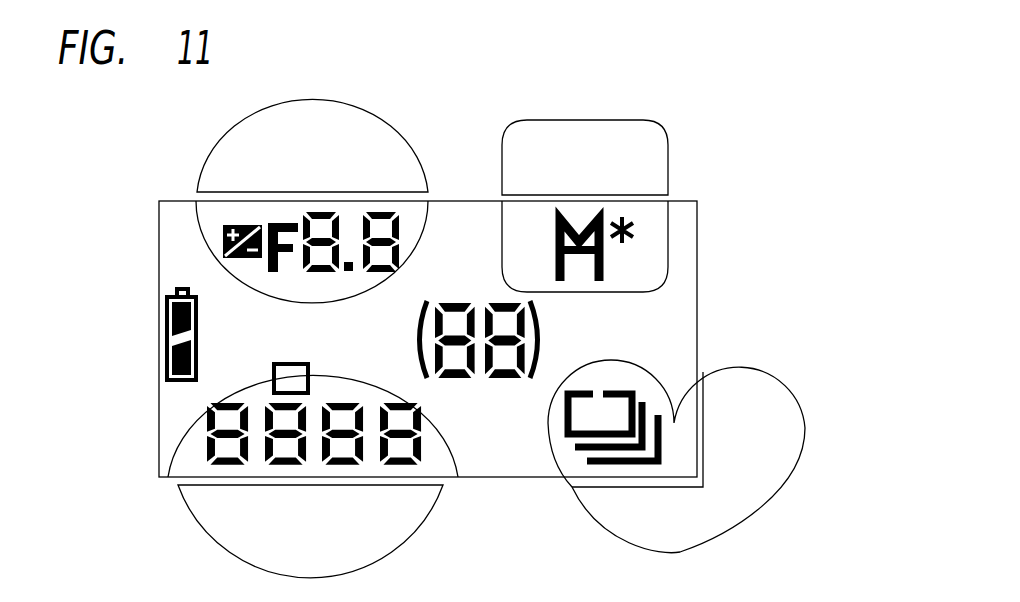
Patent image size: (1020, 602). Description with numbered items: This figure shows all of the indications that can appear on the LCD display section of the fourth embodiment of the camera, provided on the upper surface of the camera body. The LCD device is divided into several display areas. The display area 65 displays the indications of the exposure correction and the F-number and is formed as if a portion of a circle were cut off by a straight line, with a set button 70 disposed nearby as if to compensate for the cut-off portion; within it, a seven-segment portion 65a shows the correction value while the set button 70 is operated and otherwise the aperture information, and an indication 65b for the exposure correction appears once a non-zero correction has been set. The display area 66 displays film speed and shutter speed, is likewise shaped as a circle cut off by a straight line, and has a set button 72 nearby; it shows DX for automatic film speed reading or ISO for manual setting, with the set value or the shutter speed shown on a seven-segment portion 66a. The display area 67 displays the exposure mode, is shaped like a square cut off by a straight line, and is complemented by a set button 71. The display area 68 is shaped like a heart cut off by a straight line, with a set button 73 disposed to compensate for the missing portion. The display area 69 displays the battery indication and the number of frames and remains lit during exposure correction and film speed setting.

The display area 65 is at (200, 215).
The seven-segment portion 65a is at (323, 213).
The indication for the exposure correction 65b is at (243, 225).
The display area 66 is at (187, 445).
The seven-segment portion 66a is at (342, 467).
The display area 67 is at (647, 242).
The display area 68 is at (562, 447).
The display area 69 is at (455, 208).
The set button 70 is at (293, 112).
The set button 71 is at (615, 128).
The set button 72 is at (198, 502).
The set button 73 is at (735, 520).